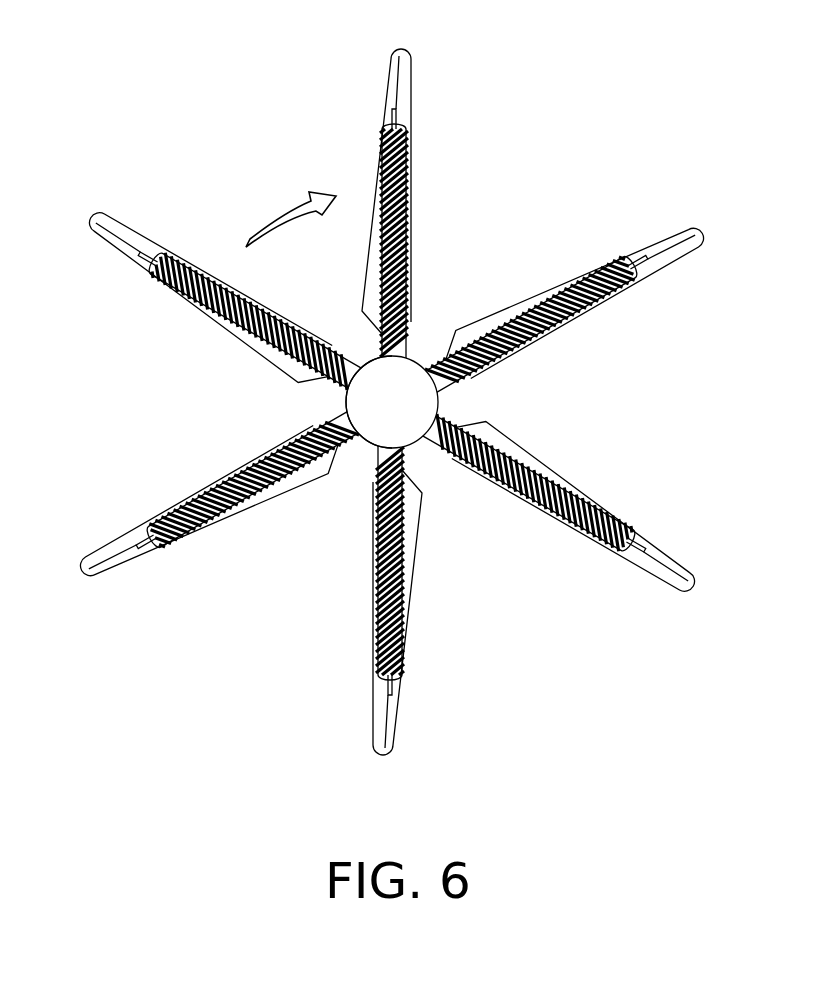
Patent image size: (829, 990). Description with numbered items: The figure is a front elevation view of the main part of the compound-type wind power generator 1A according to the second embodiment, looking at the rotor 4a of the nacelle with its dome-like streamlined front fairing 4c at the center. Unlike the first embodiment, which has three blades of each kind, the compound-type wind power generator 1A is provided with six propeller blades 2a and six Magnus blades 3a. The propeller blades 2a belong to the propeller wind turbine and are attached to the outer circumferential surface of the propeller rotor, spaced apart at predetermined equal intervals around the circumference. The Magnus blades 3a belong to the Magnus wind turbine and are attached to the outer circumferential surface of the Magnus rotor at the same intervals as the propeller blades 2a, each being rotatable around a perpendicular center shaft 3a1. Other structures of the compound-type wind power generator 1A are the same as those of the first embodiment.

The compound-type wind power generator 1A is at (213, 99).
The propeller blade 2a is at (122, 250).
The Magnus blade 3a is at (190, 303).
The center shaft 3a1 is at (152, 253).
The rotor 4a is at (449, 408).
The front fairing 4c is at (357, 402).